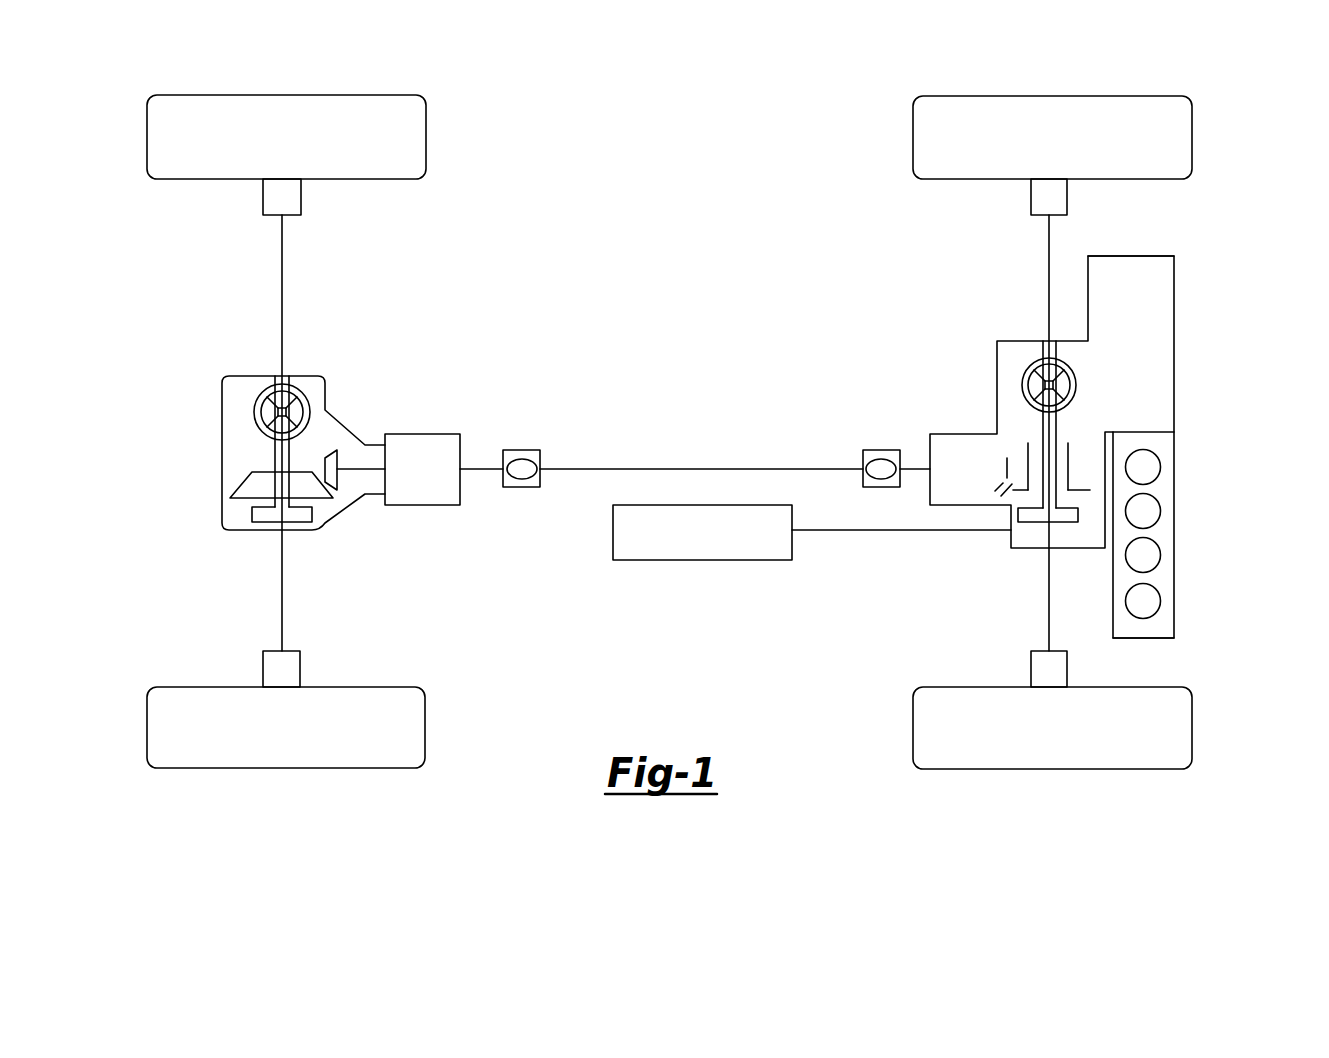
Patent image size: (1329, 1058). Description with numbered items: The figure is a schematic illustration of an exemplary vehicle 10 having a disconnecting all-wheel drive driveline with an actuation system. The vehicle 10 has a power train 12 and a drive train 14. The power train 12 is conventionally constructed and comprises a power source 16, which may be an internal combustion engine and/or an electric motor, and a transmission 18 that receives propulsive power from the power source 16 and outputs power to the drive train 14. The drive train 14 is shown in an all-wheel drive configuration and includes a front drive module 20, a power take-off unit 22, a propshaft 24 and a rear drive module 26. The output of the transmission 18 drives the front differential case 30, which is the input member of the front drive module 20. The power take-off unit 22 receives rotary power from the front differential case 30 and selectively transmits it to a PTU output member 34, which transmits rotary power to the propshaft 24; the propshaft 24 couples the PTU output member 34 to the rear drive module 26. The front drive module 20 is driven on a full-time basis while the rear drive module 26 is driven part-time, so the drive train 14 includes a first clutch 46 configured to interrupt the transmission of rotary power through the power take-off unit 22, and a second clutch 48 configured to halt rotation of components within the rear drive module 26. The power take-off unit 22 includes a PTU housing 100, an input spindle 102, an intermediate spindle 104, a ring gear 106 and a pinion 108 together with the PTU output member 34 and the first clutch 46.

The vehicle 10 is at (199, 799).
The power train 12 is at (1198, 574).
The drive train 14 is at (734, 376).
The power source 16 is at (1157, 627).
The transmission 18 is at (1160, 279).
The front drive module 20 is at (976, 296).
The power take-off unit 22 is at (911, 380).
The propshaft 24 is at (596, 469).
The rear drive module 26 is at (201, 369).
The front differential case 30 is at (1076, 378).
The PTU output member 34 is at (913, 468).
The first clutch 46 is at (1036, 522).
The second clutch 48 is at (263, 517).
The PTU housing 100 is at (950, 503).
The input spindle 102 is at (1053, 482).
The intermediate spindle 104 is at (1068, 450).
The ring gear 106 is at (1085, 487).
The pinion 108 is at (1007, 460).